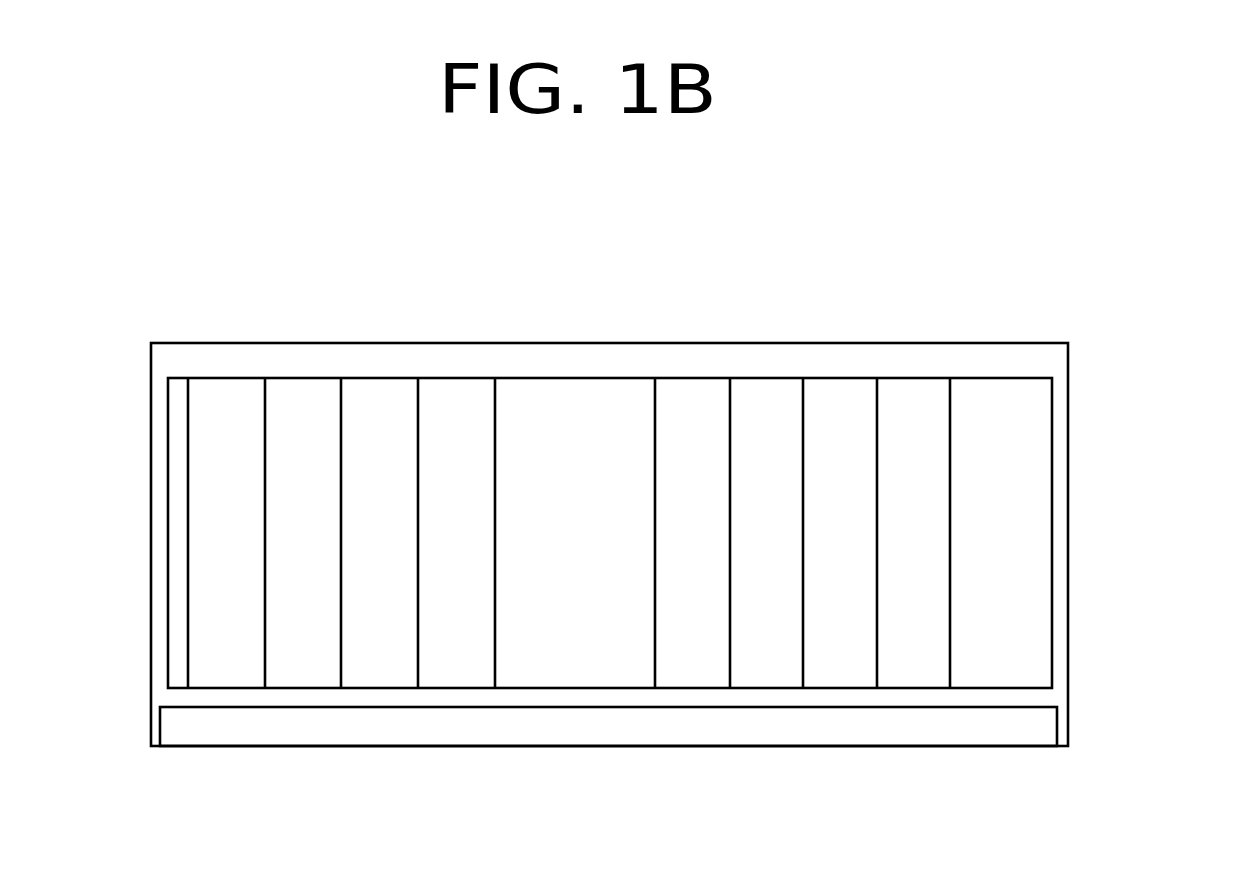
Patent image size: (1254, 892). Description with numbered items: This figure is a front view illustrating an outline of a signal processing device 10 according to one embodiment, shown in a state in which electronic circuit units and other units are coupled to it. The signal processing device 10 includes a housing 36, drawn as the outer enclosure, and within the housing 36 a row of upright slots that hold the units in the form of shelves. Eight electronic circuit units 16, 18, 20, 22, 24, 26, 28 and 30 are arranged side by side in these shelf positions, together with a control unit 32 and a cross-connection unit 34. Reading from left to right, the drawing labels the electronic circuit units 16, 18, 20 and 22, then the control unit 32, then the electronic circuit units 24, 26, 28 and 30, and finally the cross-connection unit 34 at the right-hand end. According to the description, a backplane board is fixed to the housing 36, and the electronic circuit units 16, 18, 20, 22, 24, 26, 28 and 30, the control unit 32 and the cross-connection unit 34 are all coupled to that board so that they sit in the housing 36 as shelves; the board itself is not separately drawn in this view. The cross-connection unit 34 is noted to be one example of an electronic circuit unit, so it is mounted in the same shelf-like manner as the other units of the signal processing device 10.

The signal processing device 10 is at (1133, 300).
The electronic circuit unit 16 is at (187, 657).
The electronic circuit unit 18 is at (264, 657).
The electronic circuit unit 20 is at (340, 657).
The electronic circuit unit 22 is at (417, 657).
The electronic circuit unit 24 is at (654, 657).
The electronic circuit unit 26 is at (729, 657).
The electronic circuit unit 28 is at (802, 657).
The electronic circuit unit 30 is at (876, 657).
The control unit 32 is at (494, 657).
The cross-connection unit 34 is at (949, 657).
The housing 36 is at (1057, 537).